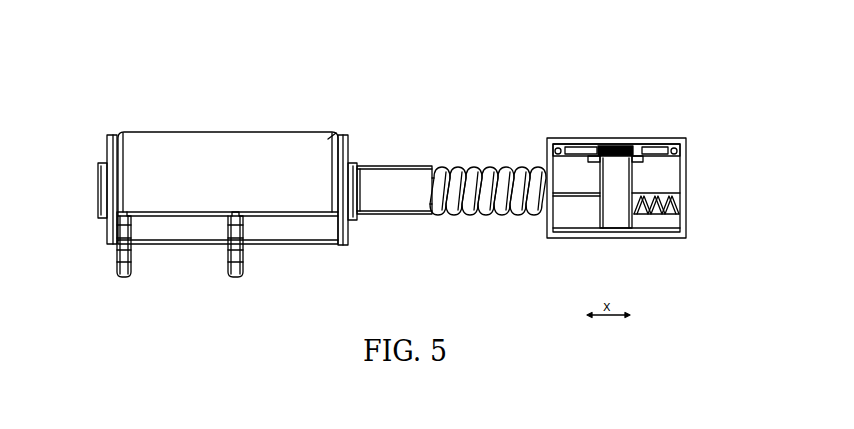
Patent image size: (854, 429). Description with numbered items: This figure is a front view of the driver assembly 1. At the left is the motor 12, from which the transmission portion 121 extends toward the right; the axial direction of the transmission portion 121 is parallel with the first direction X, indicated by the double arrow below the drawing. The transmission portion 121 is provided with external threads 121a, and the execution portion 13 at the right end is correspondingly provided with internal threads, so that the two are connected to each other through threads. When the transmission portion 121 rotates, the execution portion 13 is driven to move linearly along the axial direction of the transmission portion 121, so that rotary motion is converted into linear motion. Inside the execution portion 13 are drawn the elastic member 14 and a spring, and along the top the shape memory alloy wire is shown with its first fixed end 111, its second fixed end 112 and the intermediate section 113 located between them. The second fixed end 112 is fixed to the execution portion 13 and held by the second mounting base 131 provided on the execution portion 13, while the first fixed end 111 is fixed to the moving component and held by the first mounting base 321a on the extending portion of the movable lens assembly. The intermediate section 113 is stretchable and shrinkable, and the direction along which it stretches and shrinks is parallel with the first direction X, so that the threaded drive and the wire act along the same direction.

The driver assembly 1 is at (115, 98).
The motor 12 is at (187, 138).
The transmission portion 121 is at (380, 207).
The external threads 121a is at (493, 168).
The execution portion 13 is at (557, 225).
The elastic member 14 is at (615, 224).
The second fixed end 112 is at (558, 147).
The second mounting base 131 is at (585, 147).
The intermediate section 113 is at (620, 146).
The first mounting base 321a is at (654, 147).
The first fixed end 111 is at (675, 147).